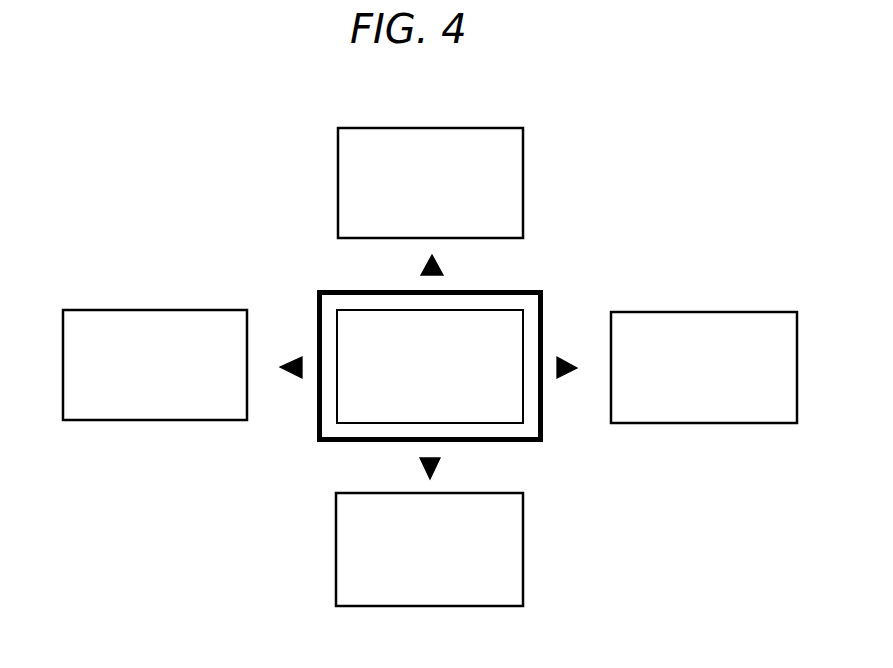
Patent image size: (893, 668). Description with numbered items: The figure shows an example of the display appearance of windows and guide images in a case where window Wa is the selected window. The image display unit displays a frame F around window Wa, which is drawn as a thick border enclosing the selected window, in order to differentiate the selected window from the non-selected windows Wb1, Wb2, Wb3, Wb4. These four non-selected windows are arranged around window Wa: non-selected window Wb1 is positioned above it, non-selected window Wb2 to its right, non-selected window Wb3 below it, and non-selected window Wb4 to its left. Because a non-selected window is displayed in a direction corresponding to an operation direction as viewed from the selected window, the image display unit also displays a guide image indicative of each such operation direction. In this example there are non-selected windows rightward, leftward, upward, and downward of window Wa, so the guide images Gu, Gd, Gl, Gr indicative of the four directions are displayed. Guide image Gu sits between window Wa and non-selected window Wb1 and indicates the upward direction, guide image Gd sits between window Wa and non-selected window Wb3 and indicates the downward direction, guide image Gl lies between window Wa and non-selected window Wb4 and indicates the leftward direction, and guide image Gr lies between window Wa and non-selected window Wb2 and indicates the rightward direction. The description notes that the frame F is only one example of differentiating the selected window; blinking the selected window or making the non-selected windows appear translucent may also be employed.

The window Wa is at (430, 366).
The non-selected window Wb1 is at (430, 183).
The non-selected window Wb2 is at (704, 367).
The non-selected window Wb3 is at (429, 549).
The non-selected window Wb4 is at (155, 365).
The frame F is at (540, 291).
The guide image Gu is at (443, 263).
The guide image Gd is at (441, 463).
The guide image Gl is at (288, 357).
The guide image Gr is at (570, 357).